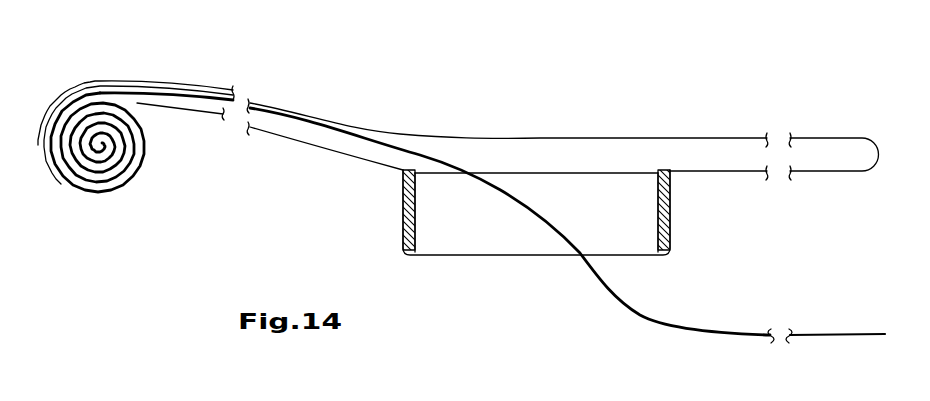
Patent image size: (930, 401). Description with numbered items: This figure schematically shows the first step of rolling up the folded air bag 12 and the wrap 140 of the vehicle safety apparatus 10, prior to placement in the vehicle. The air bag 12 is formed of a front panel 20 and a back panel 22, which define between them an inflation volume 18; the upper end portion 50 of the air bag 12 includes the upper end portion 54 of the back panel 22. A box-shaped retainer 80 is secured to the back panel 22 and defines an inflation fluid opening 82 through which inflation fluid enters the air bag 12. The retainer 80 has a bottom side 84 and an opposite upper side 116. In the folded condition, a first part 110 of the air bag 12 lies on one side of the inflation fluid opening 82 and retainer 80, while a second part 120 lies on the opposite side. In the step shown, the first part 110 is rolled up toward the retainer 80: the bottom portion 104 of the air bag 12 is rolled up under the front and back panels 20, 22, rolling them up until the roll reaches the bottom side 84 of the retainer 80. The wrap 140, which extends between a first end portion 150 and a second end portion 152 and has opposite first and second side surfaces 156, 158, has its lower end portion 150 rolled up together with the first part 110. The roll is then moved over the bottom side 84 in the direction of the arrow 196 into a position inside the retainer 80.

The vehicle safety apparatus 10 is at (246, 264).
The air bag 12 is at (265, 147).
The inflation volume 18 is at (545, 155).
The front panel 20 is at (295, 108).
The back panel 22 is at (323, 152).
The upper end portion 50 is at (880, 157).
The upper end portion of the back panel 54 is at (740, 175).
The retainer 80 is at (536, 241).
The inflation fluid opening 82 is at (622, 175).
The bottom side of the retainer 84 is at (404, 212).
The bottom portion 104 is at (105, 150).
The first part 110 is at (250, 73).
The upper side of the retainer 116 is at (670, 202).
The second part 120 is at (769, 120).
The wrap 140 is at (607, 298).
The first end portion of the wrap 150 is at (185, 95).
The second end portion of the wrap 152 is at (845, 332).
The first side surface of the wrap 156 is at (732, 336).
The second side surface of the wrap 158 is at (674, 327).
The arrow 196 is at (430, 102).